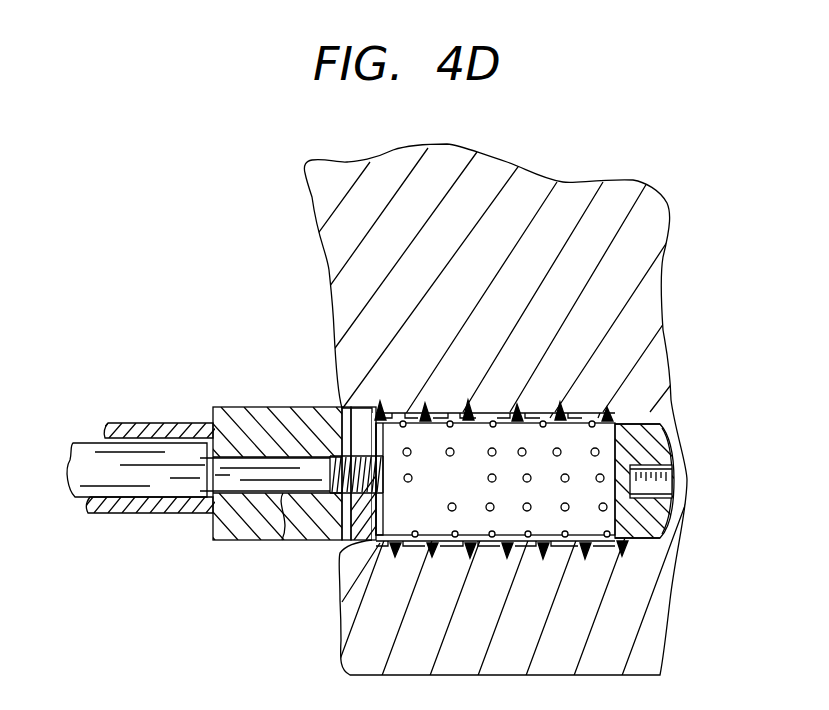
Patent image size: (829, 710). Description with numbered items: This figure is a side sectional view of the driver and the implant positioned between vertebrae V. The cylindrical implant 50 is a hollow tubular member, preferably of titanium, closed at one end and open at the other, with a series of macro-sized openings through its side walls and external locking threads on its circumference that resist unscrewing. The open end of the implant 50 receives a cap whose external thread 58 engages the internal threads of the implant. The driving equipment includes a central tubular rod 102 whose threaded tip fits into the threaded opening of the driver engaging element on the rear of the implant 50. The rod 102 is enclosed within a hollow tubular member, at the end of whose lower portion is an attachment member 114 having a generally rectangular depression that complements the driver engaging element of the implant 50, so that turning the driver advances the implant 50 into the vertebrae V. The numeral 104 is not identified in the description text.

The vertebra V is at (495, 283).
The cylindrical implant 50 is at (471, 489).
The external thread 58 is at (376, 521).
The anchoring teeth 104 is at (382, 404).
The central tubular rod 102 is at (290, 522).
The attachment member 114 is at (252, 407).